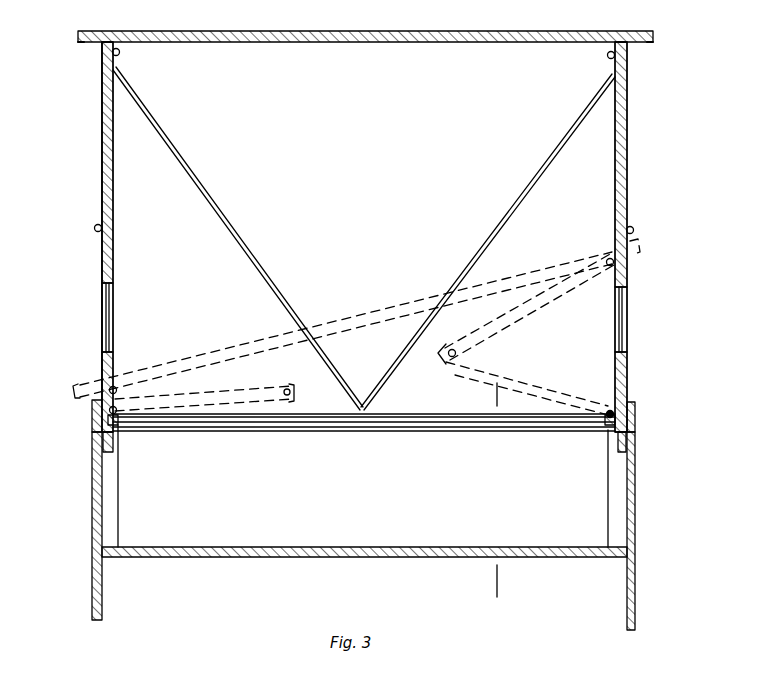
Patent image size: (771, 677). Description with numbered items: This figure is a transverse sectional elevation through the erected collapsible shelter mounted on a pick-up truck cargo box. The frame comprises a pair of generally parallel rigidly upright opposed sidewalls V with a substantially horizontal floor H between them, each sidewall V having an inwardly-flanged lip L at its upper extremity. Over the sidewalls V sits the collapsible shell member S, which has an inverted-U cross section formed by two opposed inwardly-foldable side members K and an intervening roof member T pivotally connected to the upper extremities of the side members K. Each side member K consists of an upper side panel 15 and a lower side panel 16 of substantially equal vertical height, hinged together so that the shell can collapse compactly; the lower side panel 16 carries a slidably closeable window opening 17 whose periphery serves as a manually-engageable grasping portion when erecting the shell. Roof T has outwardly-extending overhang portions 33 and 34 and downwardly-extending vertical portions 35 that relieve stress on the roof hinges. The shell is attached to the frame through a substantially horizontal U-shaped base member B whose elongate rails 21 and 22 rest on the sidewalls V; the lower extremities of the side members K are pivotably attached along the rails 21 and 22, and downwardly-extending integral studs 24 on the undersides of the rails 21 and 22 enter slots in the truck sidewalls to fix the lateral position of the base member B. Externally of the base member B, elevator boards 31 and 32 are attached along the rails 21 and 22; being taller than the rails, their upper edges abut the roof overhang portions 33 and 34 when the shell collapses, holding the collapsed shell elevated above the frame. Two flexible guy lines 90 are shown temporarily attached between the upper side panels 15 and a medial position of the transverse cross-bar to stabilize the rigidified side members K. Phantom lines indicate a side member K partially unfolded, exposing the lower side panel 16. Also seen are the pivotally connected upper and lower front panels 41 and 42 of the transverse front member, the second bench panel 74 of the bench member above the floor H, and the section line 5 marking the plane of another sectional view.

The roof member T is at (365, 25).
The roof overhang portion 33 is at (64, 53).
The roof overhang portion 34 is at (665, 53).
The downwardly-extending vertical portion 35 is at (120, 52).
The shell member S is at (98, 92).
The side member K is at (101, 128).
The upper side panel 15 is at (101, 176).
The lower side panel 16 is at (101, 255).
The window opening 17 is at (106, 320).
The guy line 90 is at (248, 242).
The lower front panel 42 is at (364, 406).
The upper front panel 41 is at (364, 437).
The elongate rail 21 is at (116, 416).
The elongate rail 22 is at (606, 426).
The elevator board 31 is at (92, 413).
The elevator board 32 is at (635, 419).
The base member B is at (116, 422).
The inwardly-flanged lip L is at (363, 486).
The stud 24 is at (364, 469).
The sidewall V is at (92, 466).
The floor H is at (364, 540).
The second bench panel 74 is at (362, 475).
The section line 5- 5 is at (497, 393).